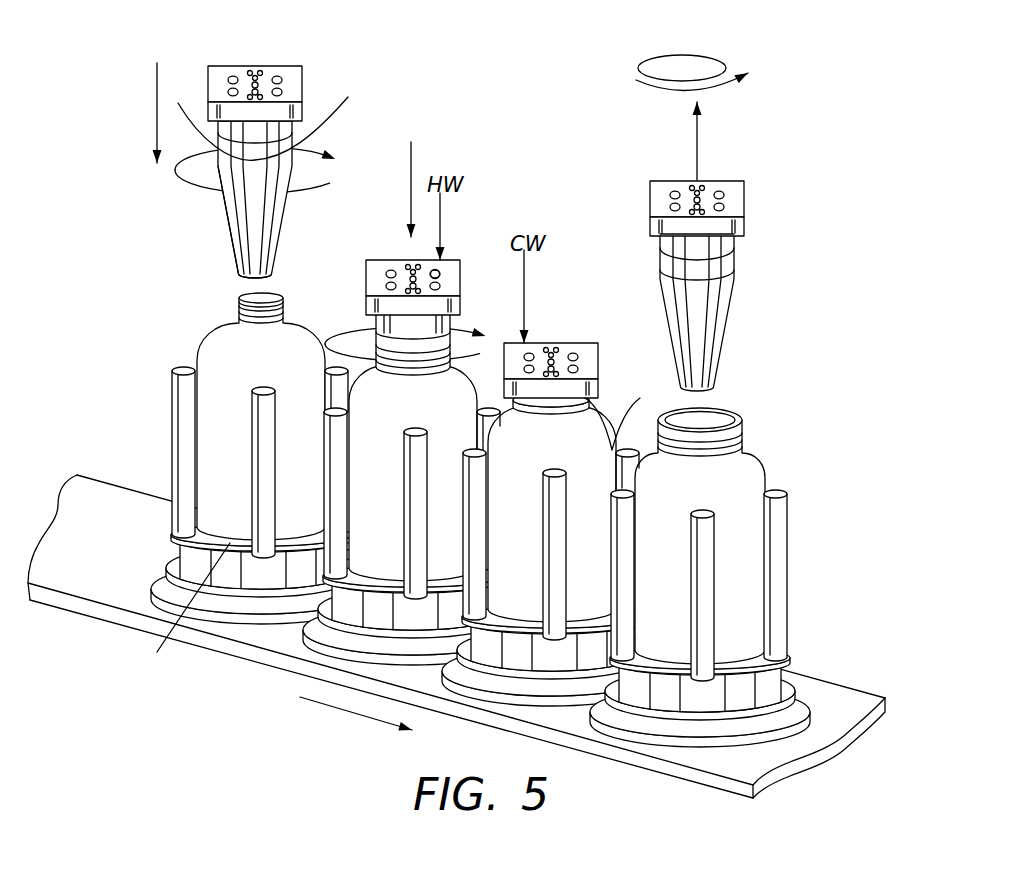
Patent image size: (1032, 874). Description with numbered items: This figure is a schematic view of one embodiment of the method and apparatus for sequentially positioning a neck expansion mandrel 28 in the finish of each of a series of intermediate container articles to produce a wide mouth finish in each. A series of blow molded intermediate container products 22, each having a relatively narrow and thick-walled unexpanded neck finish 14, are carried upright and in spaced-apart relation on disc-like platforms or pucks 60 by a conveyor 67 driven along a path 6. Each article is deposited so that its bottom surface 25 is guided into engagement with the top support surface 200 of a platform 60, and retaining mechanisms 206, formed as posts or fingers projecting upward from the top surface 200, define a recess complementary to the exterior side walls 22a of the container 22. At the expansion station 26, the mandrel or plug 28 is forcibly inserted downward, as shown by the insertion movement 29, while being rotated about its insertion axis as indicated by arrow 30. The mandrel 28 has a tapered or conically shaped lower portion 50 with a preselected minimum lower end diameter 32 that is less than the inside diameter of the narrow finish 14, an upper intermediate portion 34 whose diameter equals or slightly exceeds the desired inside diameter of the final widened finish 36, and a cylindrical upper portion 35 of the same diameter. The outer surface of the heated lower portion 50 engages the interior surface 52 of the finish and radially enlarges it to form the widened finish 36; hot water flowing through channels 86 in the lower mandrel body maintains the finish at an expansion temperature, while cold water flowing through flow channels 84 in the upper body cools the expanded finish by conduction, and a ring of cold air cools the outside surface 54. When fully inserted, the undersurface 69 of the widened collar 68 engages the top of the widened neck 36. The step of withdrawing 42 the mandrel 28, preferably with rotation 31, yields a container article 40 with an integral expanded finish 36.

The path 6 is at (300, 697).
The neck finish 14 is at (274, 291).
The intermediate container product 22 is at (357, 434).
The exterior side walls 22a is at (195, 357).
The bottom surface 25 is at (175, 606).
The expansion station 26 is at (826, 124).
The mandrel 28 is at (232, 232).
The insertion movement 29 is at (155, 118).
The rotation arrow 30 is at (176, 176).
The rotation 31 is at (640, 77).
The minimum lower end diameter 32 is at (243, 279).
The upper intermediate portion 34 is at (802, 262).
The cylindrical upper portion 35 is at (660, 248).
The widened finish 36 is at (490, 347).
The container article 40 is at (743, 519).
The withdrawing step 42 is at (695, 128).
The lower tapered portion 50 is at (237, 246).
The interior surface 52 is at (718, 423).
The outside surface 54 is at (744, 440).
The platform 60 is at (474, 624).
The conveyor 67 is at (77, 475).
The widened collar 68 is at (745, 200).
The undersurface 69 is at (737, 240).
The flow channels 84 is at (523, 350).
The channels 86 is at (438, 270).
The top support surface 200 is at (172, 533).
The retaining mechanisms 206 is at (172, 418).